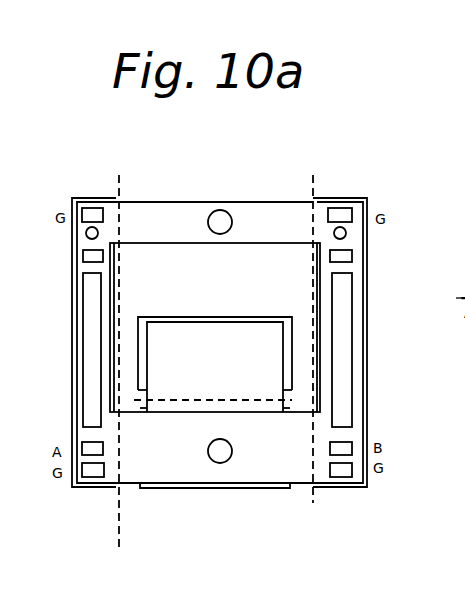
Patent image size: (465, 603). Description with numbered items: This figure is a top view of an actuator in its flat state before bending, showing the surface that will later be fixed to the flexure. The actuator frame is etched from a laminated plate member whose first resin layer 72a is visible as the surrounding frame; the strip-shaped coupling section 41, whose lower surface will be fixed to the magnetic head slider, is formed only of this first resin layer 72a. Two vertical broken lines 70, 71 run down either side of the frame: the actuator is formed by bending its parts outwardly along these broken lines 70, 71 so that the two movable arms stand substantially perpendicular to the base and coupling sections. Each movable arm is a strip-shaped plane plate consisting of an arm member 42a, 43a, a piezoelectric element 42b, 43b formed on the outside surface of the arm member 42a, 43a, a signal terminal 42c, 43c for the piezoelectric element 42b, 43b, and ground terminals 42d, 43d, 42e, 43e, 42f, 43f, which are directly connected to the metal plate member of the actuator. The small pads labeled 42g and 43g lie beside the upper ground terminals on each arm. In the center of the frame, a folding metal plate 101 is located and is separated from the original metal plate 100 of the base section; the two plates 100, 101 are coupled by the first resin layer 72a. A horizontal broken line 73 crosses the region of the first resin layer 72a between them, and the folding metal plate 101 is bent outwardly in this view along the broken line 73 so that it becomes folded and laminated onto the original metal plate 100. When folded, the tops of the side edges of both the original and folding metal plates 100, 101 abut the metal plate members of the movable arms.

The coupling section 41 is at (176, 212).
The broken line 70 is at (315, 490).
The broken line 71 is at (118, 378).
The first resin layer 72a is at (272, 222).
The broken line 73 is at (228, 397).
The original metal plate 100 is at (185, 486).
The folding metal plate 101 is at (190, 345).
The arm member 42a is at (357, 293).
The piezoelectric element 42b is at (347, 354).
The signal terminal 42c is at (363, 421).
The ground terminal 42d is at (352, 257).
The ground terminal 42e is at (345, 467).
The ground terminal 42f is at (343, 212).
The right ground hole 42g is at (345, 234).
The arm member 43a is at (78, 358).
The piezoelectric element 43b is at (90, 332).
The signal terminal 43c is at (85, 446).
The ground terminal 43d is at (84, 257).
The ground terminal 43e is at (88, 470).
The ground terminal 43f is at (82, 208).
The left ground hole 43g is at (86, 233).